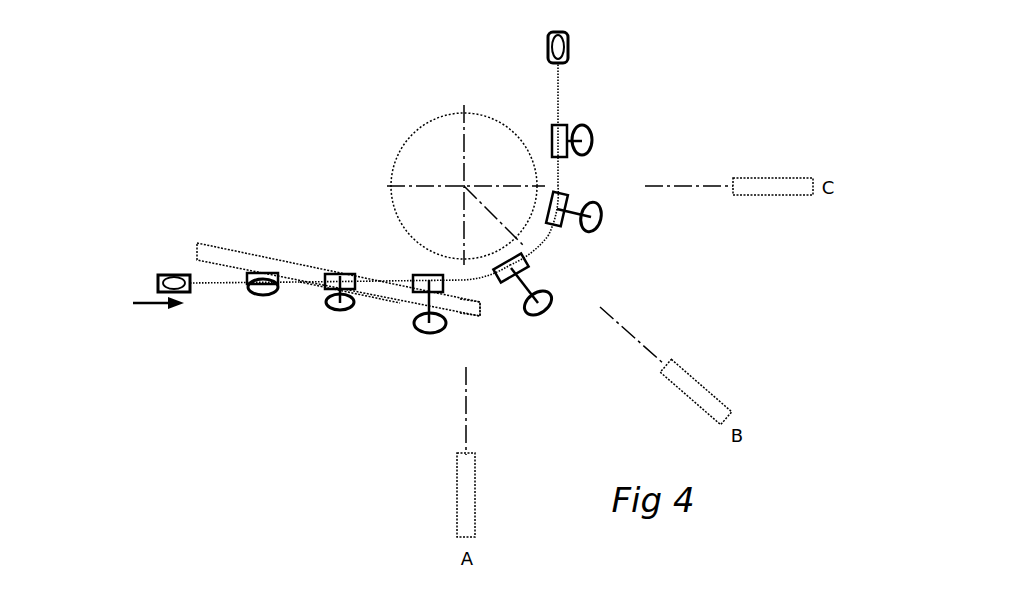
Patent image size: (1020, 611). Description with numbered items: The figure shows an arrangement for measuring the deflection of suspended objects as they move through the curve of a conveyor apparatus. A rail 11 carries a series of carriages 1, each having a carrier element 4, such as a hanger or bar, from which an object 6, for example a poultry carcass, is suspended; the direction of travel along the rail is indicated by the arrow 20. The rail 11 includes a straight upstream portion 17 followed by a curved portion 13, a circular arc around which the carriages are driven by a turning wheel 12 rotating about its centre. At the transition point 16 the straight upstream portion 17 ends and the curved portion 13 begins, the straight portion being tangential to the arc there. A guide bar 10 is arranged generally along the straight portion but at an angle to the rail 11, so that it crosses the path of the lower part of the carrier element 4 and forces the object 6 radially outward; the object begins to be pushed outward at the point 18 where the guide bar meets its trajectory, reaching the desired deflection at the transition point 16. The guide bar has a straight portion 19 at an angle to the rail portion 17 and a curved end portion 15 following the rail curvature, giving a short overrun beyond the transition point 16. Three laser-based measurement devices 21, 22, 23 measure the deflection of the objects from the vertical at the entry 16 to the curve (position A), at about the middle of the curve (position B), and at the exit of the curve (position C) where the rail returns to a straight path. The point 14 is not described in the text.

The carriage 1 is at (550, 32).
The carrier element 4 is at (568, 133).
The object 6 is at (547, 50).
The guide bar 10 is at (253, 248).
The rail 11 is at (562, 82).
The turning wheel 12 is at (423, 123).
The curved portion 13 is at (537, 255).
The belt deflection point 14 is at (560, 183).
The curved end portion 15 is at (465, 322).
The transition point 16 is at (470, 280).
The straight upstream portion 17 is at (203, 283).
The point where the guiding bar intersects the trajectory of the object 18 is at (290, 281).
The straight portion of the guide bar 19 is at (384, 298).
The arrow 20 is at (145, 308).
The laser-based measurement device 21 is at (457, 487).
The laser-based measurement device 22 is at (690, 395).
The laser-based measurement device 23 is at (773, 185).